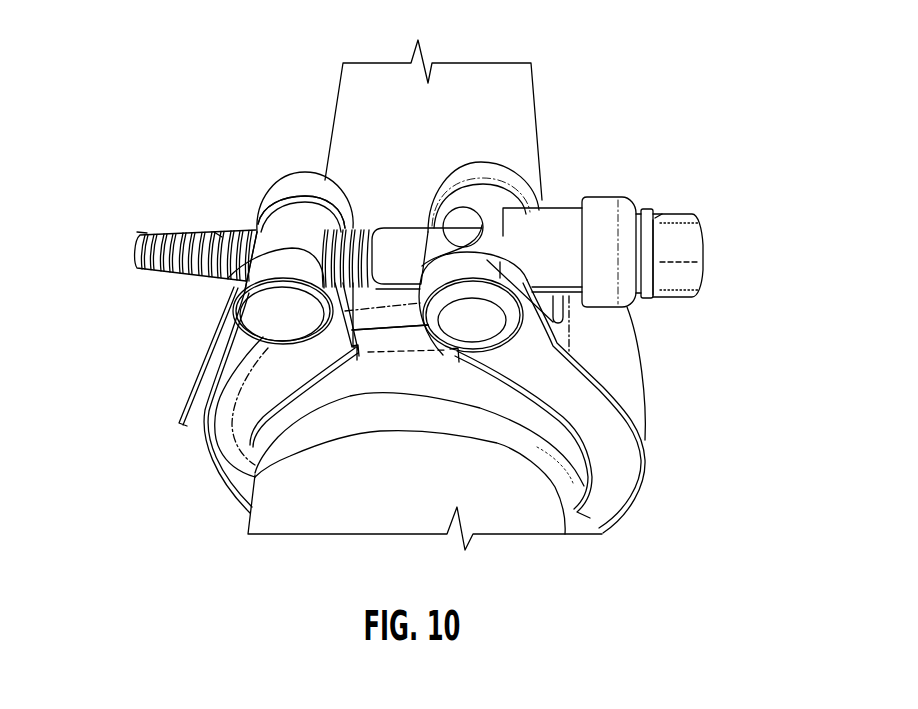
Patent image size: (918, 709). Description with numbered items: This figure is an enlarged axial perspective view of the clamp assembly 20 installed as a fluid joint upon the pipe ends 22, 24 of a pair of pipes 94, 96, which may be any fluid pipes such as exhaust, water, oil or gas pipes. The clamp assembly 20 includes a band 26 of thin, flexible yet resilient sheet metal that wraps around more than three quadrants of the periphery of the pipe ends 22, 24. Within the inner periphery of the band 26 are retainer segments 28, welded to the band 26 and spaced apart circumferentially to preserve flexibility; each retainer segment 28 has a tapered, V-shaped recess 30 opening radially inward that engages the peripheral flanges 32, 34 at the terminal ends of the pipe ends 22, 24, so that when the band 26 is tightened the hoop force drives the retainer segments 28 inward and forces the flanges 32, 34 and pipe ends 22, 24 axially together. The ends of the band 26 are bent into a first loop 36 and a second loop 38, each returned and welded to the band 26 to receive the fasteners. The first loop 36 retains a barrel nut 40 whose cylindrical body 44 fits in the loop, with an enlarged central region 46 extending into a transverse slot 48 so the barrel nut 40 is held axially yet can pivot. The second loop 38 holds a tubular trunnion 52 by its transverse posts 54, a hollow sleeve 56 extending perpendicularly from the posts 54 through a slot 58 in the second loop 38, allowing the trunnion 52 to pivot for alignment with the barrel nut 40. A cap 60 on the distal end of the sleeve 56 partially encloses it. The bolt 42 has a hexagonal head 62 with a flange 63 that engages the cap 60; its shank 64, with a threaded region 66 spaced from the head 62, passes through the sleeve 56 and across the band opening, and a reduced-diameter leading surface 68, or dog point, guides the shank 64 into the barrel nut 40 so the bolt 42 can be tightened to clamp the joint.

The clamp assembly 20 is at (286, 181).
The pipe end 22 is at (369, 290).
The pipe end 24 is at (397, 297).
The band 26 is at (640, 478).
The retainer segments 28 is at (612, 442).
The recess 30 is at (357, 303).
The peripheral flange 32 is at (395, 345).
The peripheral flange 34 is at (408, 298).
The first loop 36 is at (232, 327).
The second loop 38 is at (563, 341).
The barrel nut 40 is at (137, 243).
The bolt 42 is at (686, 223).
The barrel nut body 44 is at (268, 338).
The central region 46 is at (272, 226).
The slot 48 is at (264, 211).
The trunnion 52 is at (564, 195).
The transverse posts 54 is at (475, 286).
The sleeve 56 is at (567, 225).
The slot 58 is at (468, 203).
The cap 60 is at (613, 210).
The head 62 is at (688, 245).
The flange 63 is at (643, 233).
The shank 64 is at (392, 300).
The threaded region 66 is at (221, 237).
The leading surface 68 is at (247, 291).
The pipe 94 is at (276, 499).
The pipe 96 is at (367, 106).